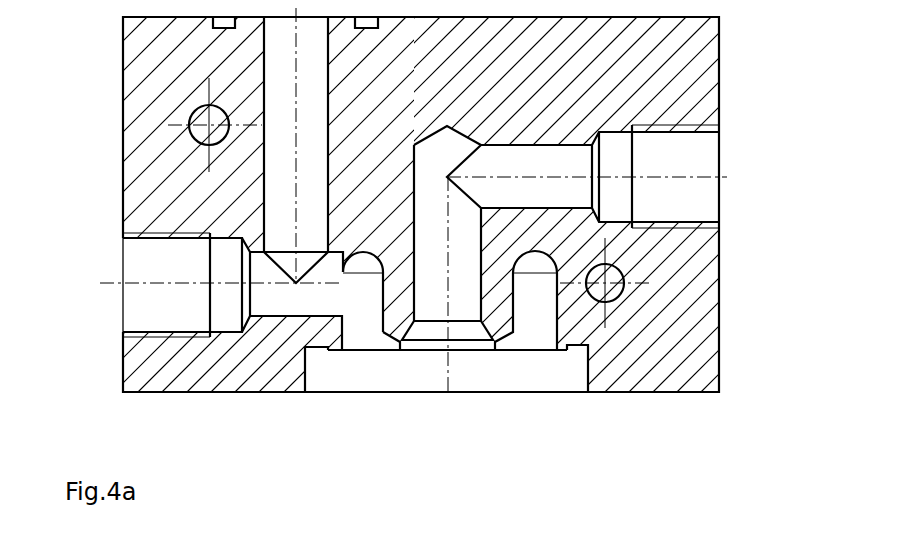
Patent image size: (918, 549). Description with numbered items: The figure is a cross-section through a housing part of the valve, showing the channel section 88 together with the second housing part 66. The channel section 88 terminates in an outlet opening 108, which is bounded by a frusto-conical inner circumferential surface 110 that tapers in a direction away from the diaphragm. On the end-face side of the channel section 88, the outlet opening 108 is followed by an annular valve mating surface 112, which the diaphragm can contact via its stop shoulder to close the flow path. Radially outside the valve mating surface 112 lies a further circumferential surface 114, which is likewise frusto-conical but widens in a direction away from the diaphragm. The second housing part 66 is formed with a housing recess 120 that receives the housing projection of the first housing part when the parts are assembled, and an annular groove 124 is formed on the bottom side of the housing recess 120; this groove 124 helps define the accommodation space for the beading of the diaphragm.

The second housing part 66 is at (158, 87).
The channel section 88 is at (393, 290).
The outlet opening 108 is at (457, 380).
The frusto-conical inner circumferential surface 110 is at (418, 343).
The annular valve mating surface 112 is at (495, 348).
The circumferential surface 114 is at (497, 342).
The housing recess 120 is at (306, 376).
The annular groove 124 is at (578, 350).